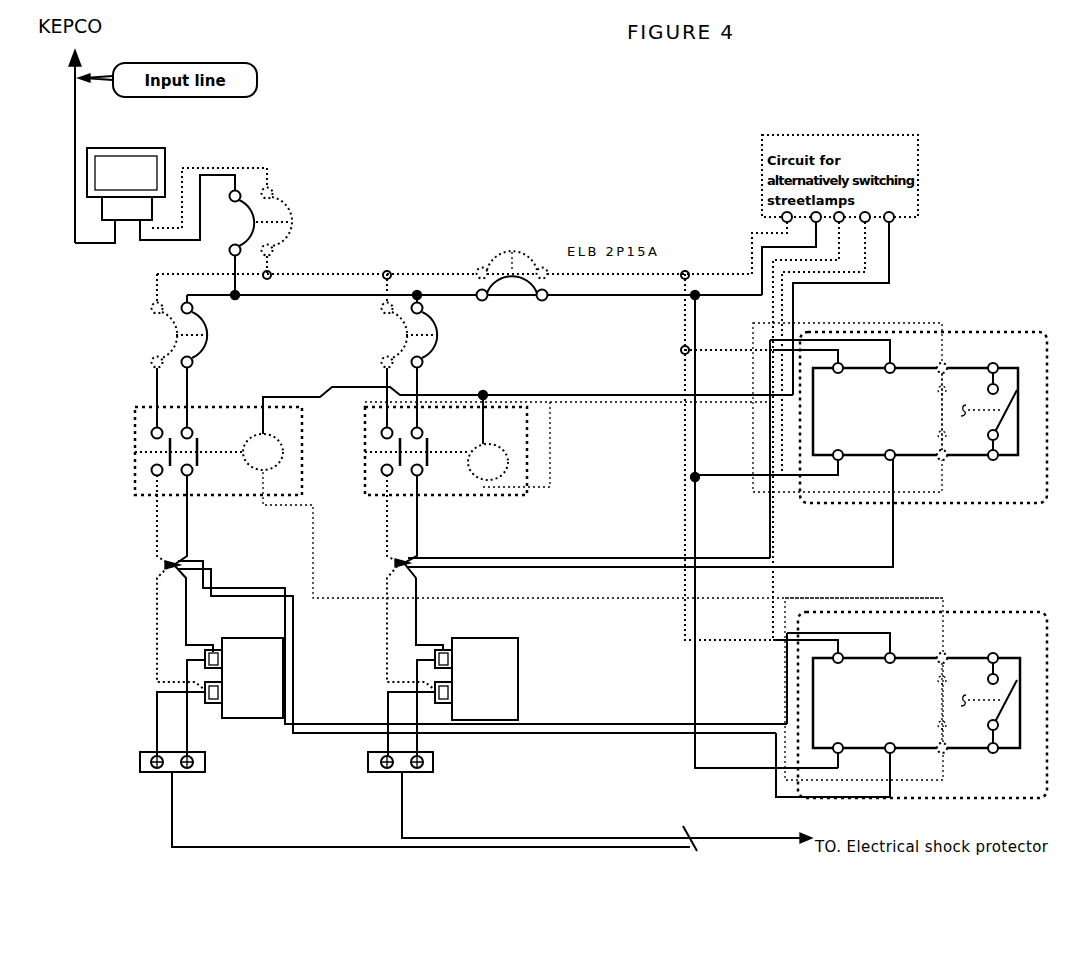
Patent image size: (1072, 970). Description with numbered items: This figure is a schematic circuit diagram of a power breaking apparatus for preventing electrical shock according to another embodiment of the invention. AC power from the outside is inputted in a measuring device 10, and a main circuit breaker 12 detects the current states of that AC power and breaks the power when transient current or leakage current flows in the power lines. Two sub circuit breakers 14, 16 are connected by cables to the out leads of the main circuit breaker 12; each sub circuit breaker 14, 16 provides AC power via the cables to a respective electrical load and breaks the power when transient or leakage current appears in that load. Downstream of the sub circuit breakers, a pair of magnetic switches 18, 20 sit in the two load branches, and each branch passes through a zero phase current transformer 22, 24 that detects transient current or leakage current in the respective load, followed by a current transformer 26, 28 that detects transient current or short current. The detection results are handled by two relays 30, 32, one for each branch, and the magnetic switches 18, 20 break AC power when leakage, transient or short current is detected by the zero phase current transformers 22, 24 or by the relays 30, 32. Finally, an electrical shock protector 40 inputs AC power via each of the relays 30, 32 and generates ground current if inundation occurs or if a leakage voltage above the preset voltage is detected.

The measuring device 10 is at (165, 155).
The main circuit breaker 12 is at (284, 197).
The sub circuit breaker 14 is at (210, 335).
The sub circuit breaker 16 is at (405, 340).
The magnetic switch 18 is at (135, 445).
The magnetic switch 20 is at (527, 430).
The zero phase current transformer 22 is at (160, 568).
The zero phase current transformer 24 is at (398, 563).
The current transformer 26 is at (212, 706).
The current transformer 28 is at (442, 706).
The relay 30 is at (255, 638).
The relay 32 is at (500, 638).
The electrical shock protector 40 is at (893, 860).